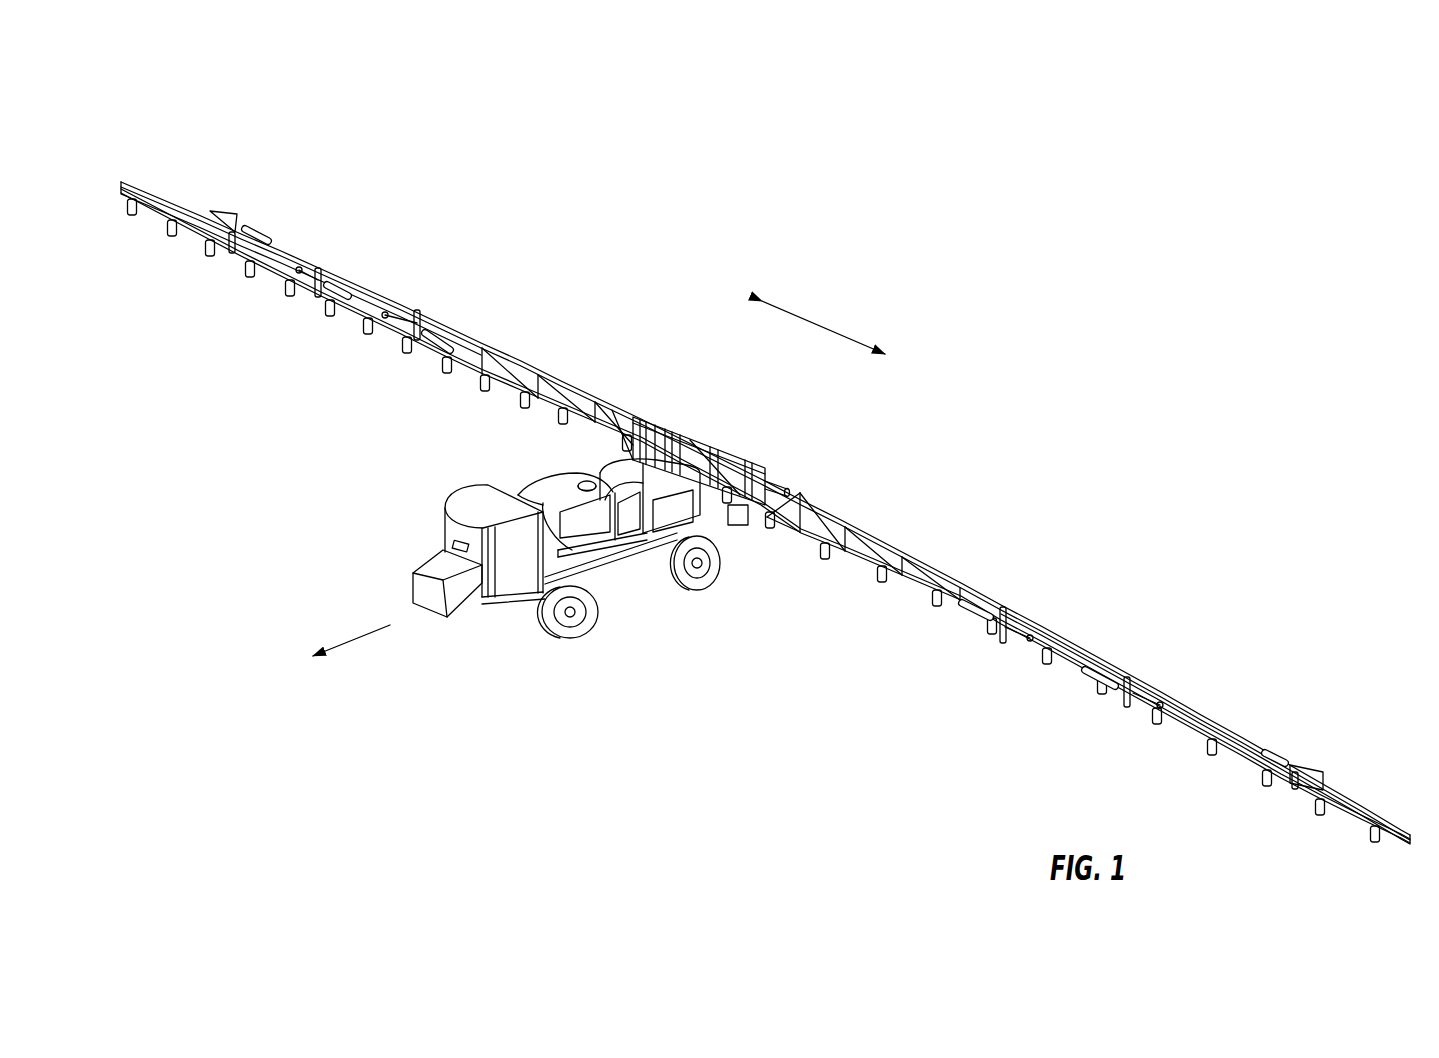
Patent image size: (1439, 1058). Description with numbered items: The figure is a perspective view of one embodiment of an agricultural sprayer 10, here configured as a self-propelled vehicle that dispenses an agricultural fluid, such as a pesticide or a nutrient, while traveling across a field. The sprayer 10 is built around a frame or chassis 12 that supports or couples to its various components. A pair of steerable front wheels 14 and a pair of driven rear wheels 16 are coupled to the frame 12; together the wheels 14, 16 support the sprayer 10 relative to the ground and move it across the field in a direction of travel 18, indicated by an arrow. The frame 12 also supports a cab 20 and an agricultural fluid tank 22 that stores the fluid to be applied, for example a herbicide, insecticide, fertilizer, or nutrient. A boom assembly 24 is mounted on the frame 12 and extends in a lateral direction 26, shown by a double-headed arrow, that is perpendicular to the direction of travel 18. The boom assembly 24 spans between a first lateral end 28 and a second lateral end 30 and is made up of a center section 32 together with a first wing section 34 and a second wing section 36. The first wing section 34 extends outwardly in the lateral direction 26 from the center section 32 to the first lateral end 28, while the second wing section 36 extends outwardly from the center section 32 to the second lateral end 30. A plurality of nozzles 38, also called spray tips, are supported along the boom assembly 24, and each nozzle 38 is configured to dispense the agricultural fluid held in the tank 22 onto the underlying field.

The agricultural sprayer 10 is at (183, 162).
The frame 12 is at (607, 577).
The front wheels 14 is at (563, 637).
The rear wheels 16 is at (693, 592).
The direction of travel 18 is at (352, 643).
The cab 20 is at (470, 505).
The agricultural fluid tank 22 is at (563, 490).
The boom assembly 24 is at (818, 475).
The lateral direction 26 is at (822, 322).
The first lateral end 28 is at (1412, 810).
The second lateral end 30 is at (103, 168).
The center section 32 is at (720, 442).
The first wing section 34 is at (1118, 668).
The second wing section 36 is at (300, 263).
The nozzles 38 is at (292, 300).